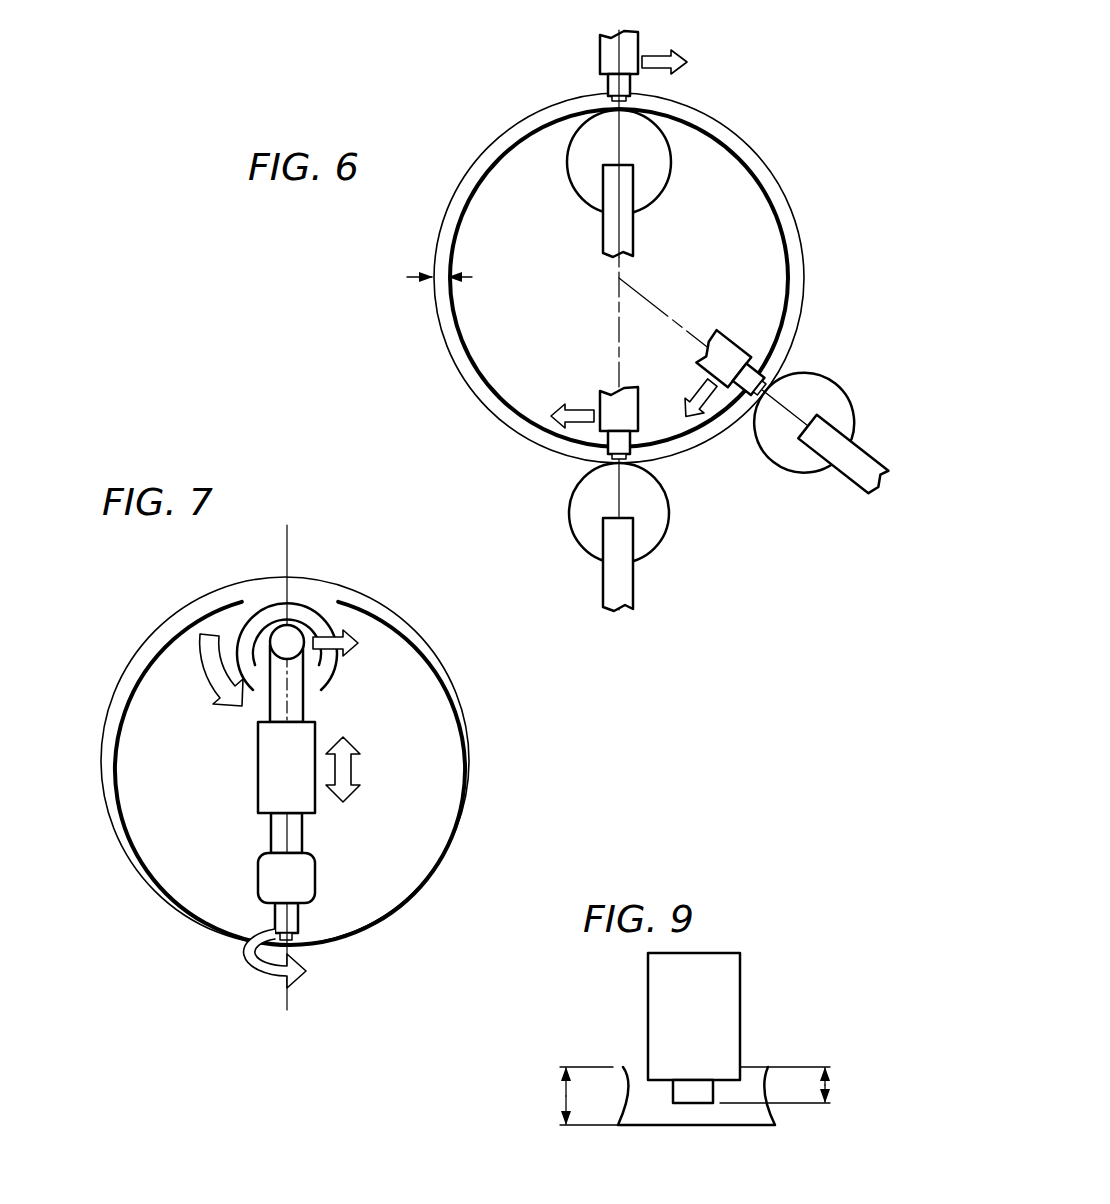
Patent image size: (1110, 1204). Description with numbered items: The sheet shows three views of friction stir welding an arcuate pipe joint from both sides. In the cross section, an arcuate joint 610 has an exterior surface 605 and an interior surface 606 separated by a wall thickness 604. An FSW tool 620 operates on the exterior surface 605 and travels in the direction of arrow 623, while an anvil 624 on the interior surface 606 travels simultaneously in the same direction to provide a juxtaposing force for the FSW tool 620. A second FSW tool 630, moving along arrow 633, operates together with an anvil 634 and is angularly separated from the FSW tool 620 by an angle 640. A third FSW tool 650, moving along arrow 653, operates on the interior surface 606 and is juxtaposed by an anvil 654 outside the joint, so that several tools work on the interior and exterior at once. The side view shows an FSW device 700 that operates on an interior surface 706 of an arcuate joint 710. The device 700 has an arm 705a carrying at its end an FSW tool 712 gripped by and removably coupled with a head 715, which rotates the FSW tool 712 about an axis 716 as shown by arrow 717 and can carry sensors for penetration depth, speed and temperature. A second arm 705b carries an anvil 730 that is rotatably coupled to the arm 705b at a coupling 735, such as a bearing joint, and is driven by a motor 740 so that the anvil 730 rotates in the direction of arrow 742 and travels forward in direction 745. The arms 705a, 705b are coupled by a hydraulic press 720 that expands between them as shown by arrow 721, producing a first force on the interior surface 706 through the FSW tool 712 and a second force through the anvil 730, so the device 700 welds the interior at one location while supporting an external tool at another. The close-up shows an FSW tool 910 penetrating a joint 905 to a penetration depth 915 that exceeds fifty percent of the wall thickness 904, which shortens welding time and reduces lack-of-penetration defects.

In FIG. 6, the wall thickness 604 is at (407, 278).
In FIG. 6, the exterior surface 605 is at (473, 165).
In FIG. 6, the interior surface 606 is at (457, 212).
In FIG. 6, the arcuate joint 610 is at (590, 274).
In FIG. 6, the FSW tool 620 is at (626, 57).
In FIG. 6, the arrow 623 is at (680, 44).
In FIG. 6, the anvil 624 is at (662, 170).
In FIG. 6, the FSW tool 630 is at (709, 365).
In FIG. 6, the arrow 633 is at (697, 392).
In FIG. 6, the anvil 634 is at (778, 453).
In FIG. 6, the angle 640 is at (621, 277).
In FIG. 6, the FSW tool 650 is at (569, 419).
In FIG. 6, the arrow 653 is at (571, 389).
In FIG. 6, the anvil 654 is at (649, 537).
In FIG. 7, the FSW device 700 is at (341, 764).
In FIG. 7, the arm 705a is at (273, 832).
In FIG. 7, the arm 705b is at (298, 703).
In FIG. 7, the interior surface 706 is at (122, 696).
In FIG. 7, the arcuate joint 710 is at (256, 761).
In FIG. 7, the FSW tool 712 is at (293, 923).
In FIG. 7, the head 715 is at (317, 870).
In FIG. 7, the axis 716 is at (290, 540).
In FIG. 7, the arrow 717 is at (247, 957).
In FIG. 7, the hydraulic press 720 is at (262, 780).
In FIG. 7, the arrow 721 is at (353, 767).
In FIG. 7, the anvil 730 is at (276, 608).
In FIG. 7, the coupling 735 is at (273, 638).
In FIG. 7, the motor 740 is at (297, 620).
In FIG. 7, the arrow 742 is at (210, 687).
In FIG. 7, the direction 745 is at (350, 652).
In FIG. 9, the wall thickness 904 is at (565, 1090).
In FIG. 9, the joint 905 is at (730, 1125).
In FIG. 9, the FSW tool 910 is at (732, 997).
In FIG. 9, the penetration depth 915 is at (825, 1085).